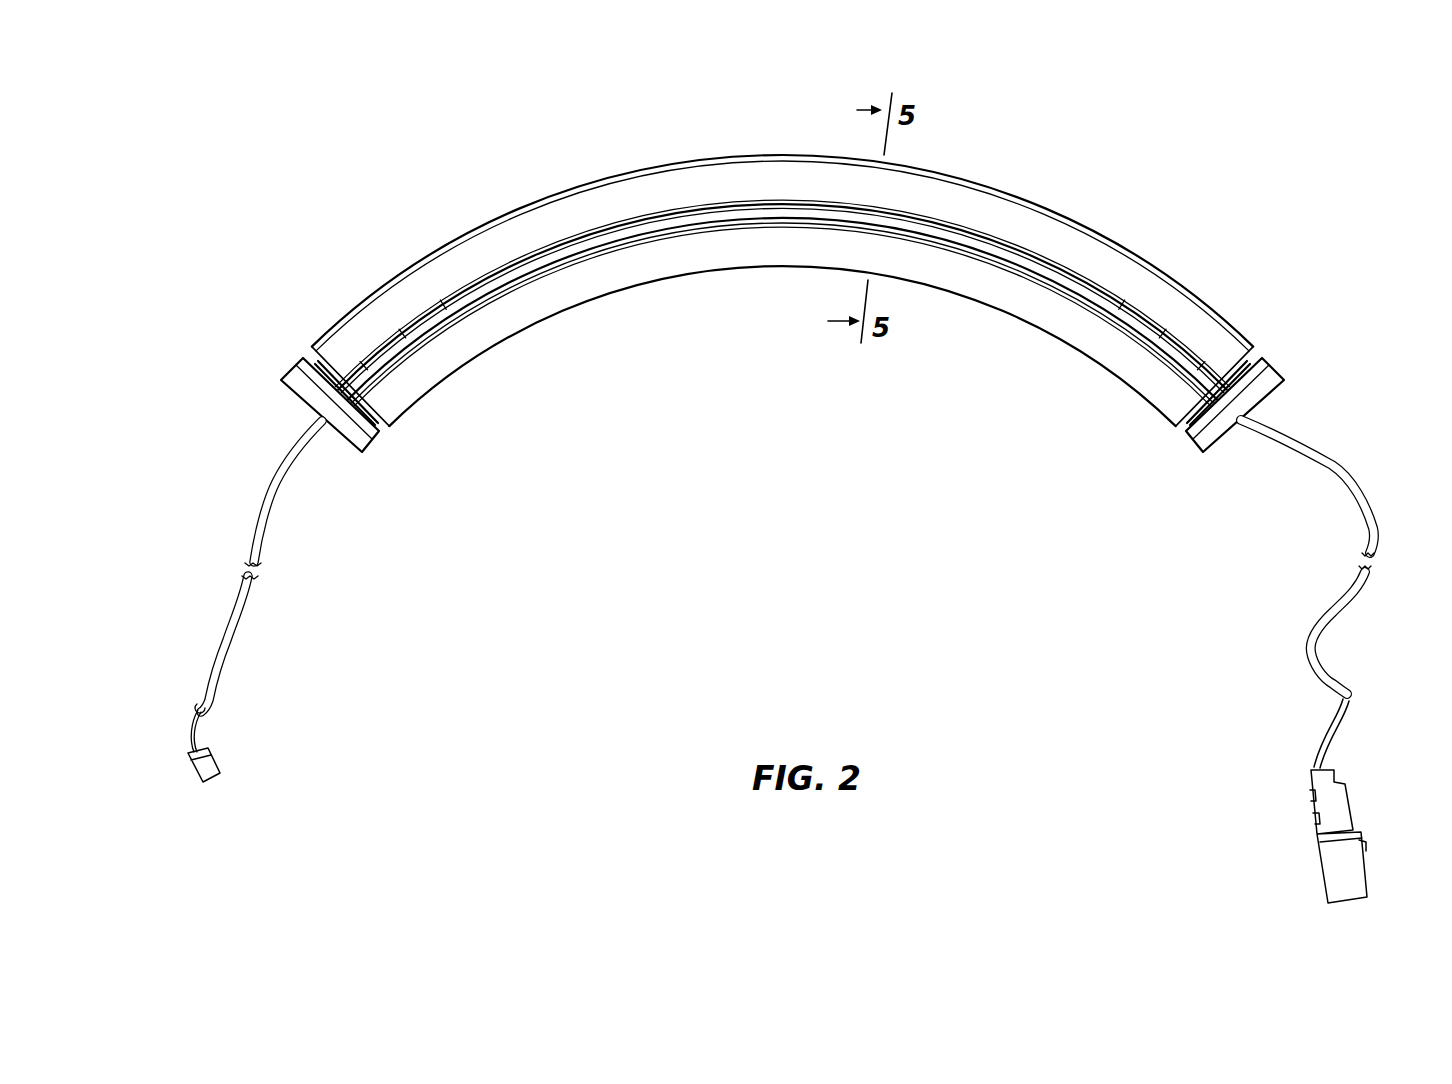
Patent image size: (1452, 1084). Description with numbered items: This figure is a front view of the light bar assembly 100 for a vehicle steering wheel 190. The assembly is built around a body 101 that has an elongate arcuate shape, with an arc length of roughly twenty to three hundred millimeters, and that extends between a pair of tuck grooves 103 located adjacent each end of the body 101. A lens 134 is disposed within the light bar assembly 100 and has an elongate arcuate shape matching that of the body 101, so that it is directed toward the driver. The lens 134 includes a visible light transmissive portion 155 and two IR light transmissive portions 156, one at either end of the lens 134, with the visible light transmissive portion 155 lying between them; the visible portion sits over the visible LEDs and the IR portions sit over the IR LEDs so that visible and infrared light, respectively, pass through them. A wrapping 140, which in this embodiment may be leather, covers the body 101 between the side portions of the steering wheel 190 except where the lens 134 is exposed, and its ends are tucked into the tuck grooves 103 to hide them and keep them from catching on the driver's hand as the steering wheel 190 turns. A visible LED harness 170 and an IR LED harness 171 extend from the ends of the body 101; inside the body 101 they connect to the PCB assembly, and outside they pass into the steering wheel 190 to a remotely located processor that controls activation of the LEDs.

The light bar assembly 100 is at (788, 496).
The body 101 is at (707, 157).
The tuck grooves 103 is at (309, 354).
The lens 134 is at (732, 217).
The wrapping 140 is at (767, 258).
The visible light transmissive portion 155 is at (799, 259).
The IR light transmissive portion 156 is at (373, 342).
The visible LED harness 170 is at (252, 546).
The IR LED harness 171 is at (1351, 465).
The steering wheel 190 is at (283, 368).